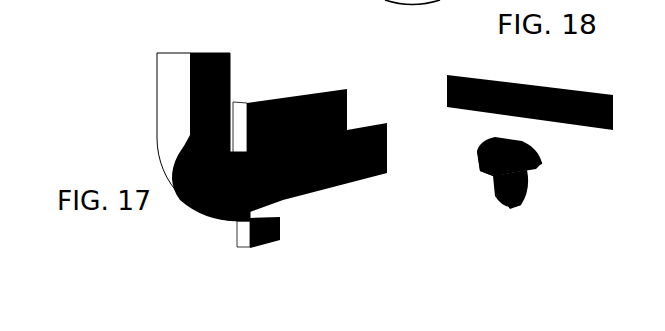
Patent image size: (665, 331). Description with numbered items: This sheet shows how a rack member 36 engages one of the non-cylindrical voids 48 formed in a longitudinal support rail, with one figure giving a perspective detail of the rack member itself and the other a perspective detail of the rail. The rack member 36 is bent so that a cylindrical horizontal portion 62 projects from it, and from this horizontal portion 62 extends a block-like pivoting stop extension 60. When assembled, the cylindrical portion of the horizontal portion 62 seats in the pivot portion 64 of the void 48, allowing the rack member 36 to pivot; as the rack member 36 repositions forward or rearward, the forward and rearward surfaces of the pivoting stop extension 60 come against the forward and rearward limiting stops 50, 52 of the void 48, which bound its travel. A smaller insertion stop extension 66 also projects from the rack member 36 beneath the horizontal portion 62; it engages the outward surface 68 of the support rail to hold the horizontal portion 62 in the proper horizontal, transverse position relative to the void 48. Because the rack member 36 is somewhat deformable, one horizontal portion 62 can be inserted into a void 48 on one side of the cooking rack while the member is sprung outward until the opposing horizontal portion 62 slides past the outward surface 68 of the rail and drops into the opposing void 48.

In FIG. 17, the rack member 36 is at (158, 92).
In FIG. 17, the pivoting stop extension 60 is at (287, 100).
In FIG. 17, the horizontal portion 62 is at (363, 128).
In FIG. 17, the insertion stop extension 66 is at (243, 243).
In FIG. 18, the non-cylindrical void 48 is at (520, 138).
In FIG. 18, the forward limiting stop 50 is at (483, 178).
In FIG. 18, the pivot portion 64 is at (512, 208).
In FIG. 18, the outward surface 68 is at (474, 157).
In FIG. 18, the rearward limiting stop 52 is at (540, 187).